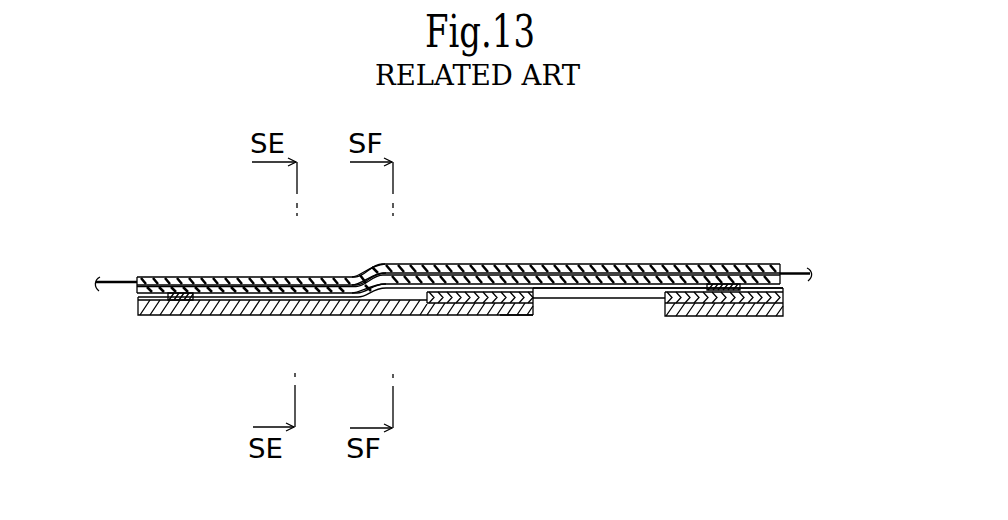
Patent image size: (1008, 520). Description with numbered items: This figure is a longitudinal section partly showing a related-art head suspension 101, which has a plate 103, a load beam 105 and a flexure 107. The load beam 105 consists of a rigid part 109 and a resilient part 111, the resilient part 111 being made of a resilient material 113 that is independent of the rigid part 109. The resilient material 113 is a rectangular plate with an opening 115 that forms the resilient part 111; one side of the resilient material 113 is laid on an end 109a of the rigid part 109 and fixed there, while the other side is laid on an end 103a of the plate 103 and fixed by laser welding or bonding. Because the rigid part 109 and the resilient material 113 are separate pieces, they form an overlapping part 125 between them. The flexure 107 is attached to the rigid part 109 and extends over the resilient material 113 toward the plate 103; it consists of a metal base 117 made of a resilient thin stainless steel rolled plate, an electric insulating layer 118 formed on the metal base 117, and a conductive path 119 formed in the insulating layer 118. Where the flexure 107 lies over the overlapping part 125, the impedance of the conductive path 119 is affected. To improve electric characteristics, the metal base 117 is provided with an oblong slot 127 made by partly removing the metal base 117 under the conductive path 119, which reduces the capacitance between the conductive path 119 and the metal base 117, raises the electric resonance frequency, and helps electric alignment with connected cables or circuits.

The head suspension 101 is at (511, 209).
The plate 103 is at (753, 333).
The end of the plate 103a is at (688, 318).
The load beam 105 is at (265, 320).
The flexure 107 is at (328, 274).
The rigid part 109 is at (163, 316).
The end of the rigid part 109a is at (513, 316).
The resilient part 111 is at (637, 299).
The resilient material 113 is at (600, 300).
The opening 115 is at (553, 300).
The metal base 117 is at (784, 290).
The electric insulating layer 118 is at (777, 262).
The conductive path 119 is at (800, 272).
The overlapping part 125 is at (447, 316).
The oblong slot 127 is at (200, 301).